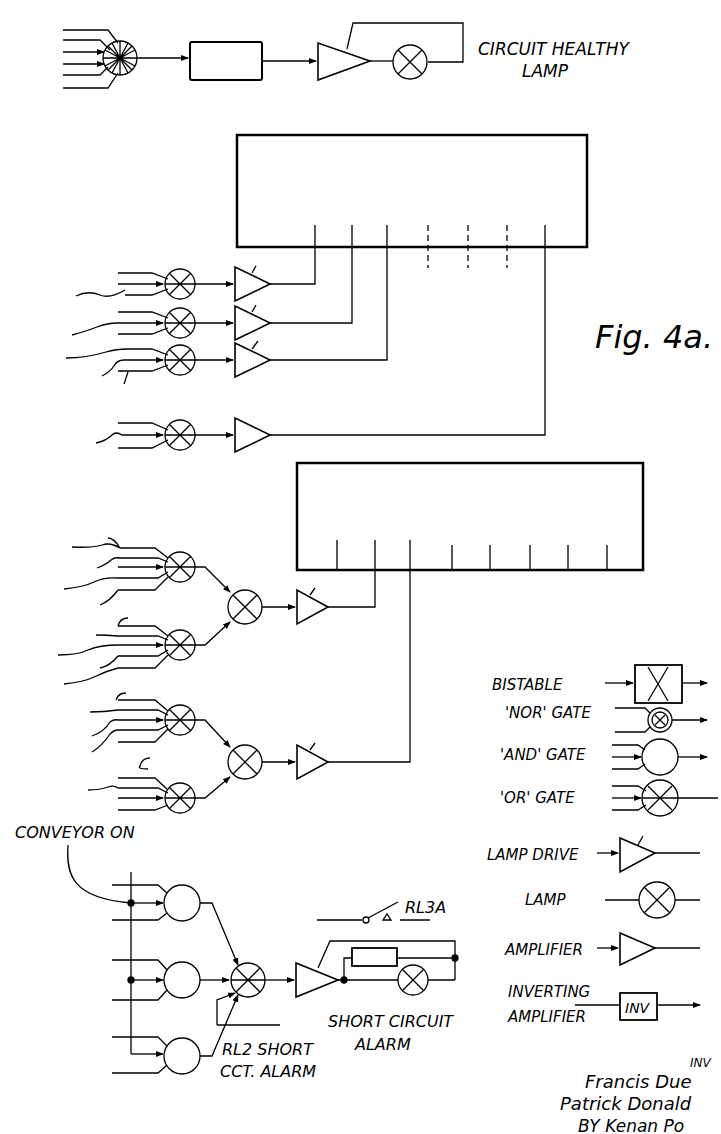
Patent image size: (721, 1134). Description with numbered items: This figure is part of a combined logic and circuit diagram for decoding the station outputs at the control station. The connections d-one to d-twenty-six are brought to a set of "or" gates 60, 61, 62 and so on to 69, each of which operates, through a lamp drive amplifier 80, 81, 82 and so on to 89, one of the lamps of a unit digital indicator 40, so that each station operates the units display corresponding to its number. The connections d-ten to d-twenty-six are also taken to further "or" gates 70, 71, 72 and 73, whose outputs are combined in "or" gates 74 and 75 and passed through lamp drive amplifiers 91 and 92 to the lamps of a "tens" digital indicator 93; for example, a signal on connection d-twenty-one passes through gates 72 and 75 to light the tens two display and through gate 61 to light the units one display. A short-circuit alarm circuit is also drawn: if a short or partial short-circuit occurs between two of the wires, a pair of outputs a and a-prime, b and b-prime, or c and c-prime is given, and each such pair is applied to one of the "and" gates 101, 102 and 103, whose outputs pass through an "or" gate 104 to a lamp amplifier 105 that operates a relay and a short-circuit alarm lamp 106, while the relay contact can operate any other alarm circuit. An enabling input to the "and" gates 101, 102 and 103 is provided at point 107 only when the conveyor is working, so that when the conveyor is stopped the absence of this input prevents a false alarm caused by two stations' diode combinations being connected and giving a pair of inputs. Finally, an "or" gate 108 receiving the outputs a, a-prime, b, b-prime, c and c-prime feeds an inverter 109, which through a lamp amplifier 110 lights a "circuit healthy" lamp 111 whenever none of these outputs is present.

The unit digital indicator 40 is at (587, 190).
The "or" gate 60 is at (186, 270).
The "or" gate 61 is at (191, 314).
The "or" gate 62 is at (189, 373).
The "or" gate 69 is at (190, 449).
The "or" gate 70 is at (192, 555).
The "or" gate 71 is at (187, 625).
The "or" gate 72 is at (190, 710).
The "or" gate 73 is at (190, 810).
The "or" gate 74 is at (256, 593).
The "or" gate 75 is at (255, 748).
The lamp drive amplifier 80 is at (258, 271).
The lamp drive amplifier 81 is at (258, 310).
The lamp drive amplifier 82 is at (260, 346).
The lamp drive amplifier 89 is at (256, 430).
The lamp drive amplifier 91 is at (315, 622).
The lamp drive amplifier 92 is at (316, 750).
The "tens" digital indicator 93 is at (643, 548).
The "and" gate 101 is at (198, 893).
The "and" gate 102 is at (201, 960).
The "and" gate 103 is at (188, 1075).
The "or" gate 104 is at (258, 973).
The lamp amplifier 105 is at (300, 999).
The short-circuit alarm lamp 106 is at (425, 992).
The point 107 is at (131, 872).
The "or" gate 108 is at (130, 47).
The inverter 109 is at (226, 80).
The lamp amplifier 110 is at (340, 81).
The "circuit healthy" lamp 111 is at (424, 77).